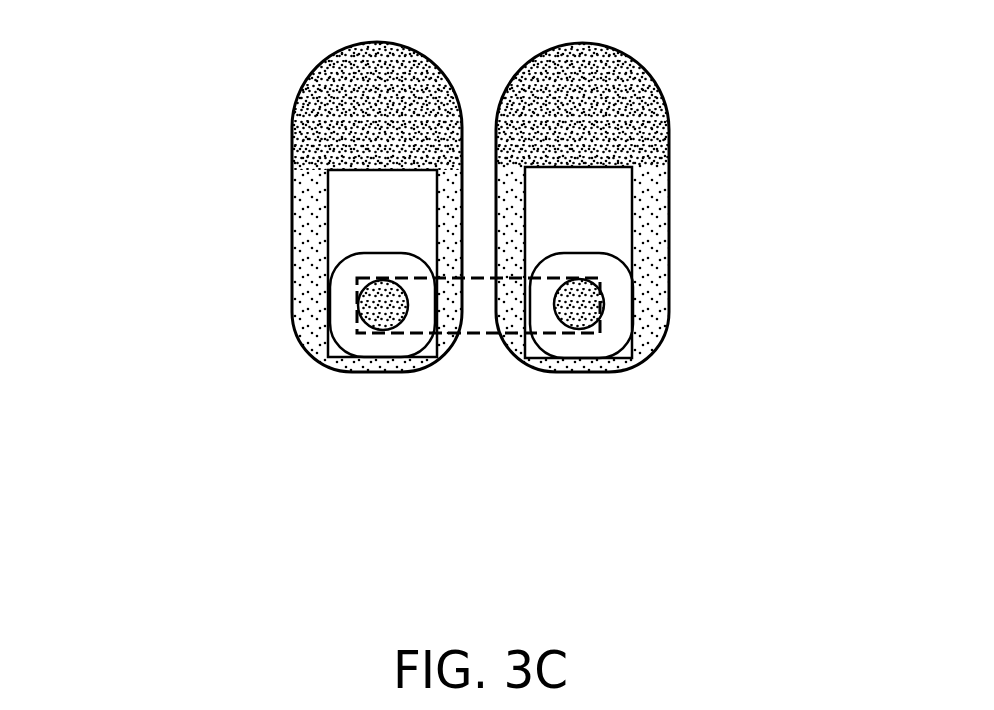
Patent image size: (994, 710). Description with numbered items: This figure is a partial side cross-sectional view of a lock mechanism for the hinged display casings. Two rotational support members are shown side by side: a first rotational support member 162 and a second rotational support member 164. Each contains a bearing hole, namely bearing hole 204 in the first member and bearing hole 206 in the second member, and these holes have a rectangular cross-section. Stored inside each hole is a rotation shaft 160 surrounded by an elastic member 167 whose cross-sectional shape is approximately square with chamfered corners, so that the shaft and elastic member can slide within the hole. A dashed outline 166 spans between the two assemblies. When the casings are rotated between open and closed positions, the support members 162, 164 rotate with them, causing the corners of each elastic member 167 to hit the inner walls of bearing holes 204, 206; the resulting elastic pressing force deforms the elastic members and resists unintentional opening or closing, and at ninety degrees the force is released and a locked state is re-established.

The first rotational support member 162 is at (291, 245).
The second rotational support member 164 is at (638, 203).
The bearing hole 204 is at (363, 203).
The bearing hole 206 is at (597, 190).
The elastic member 167 is at (343, 313).
The rotation shaft 160 is at (383, 317).
The connecting member 166 is at (486, 325).